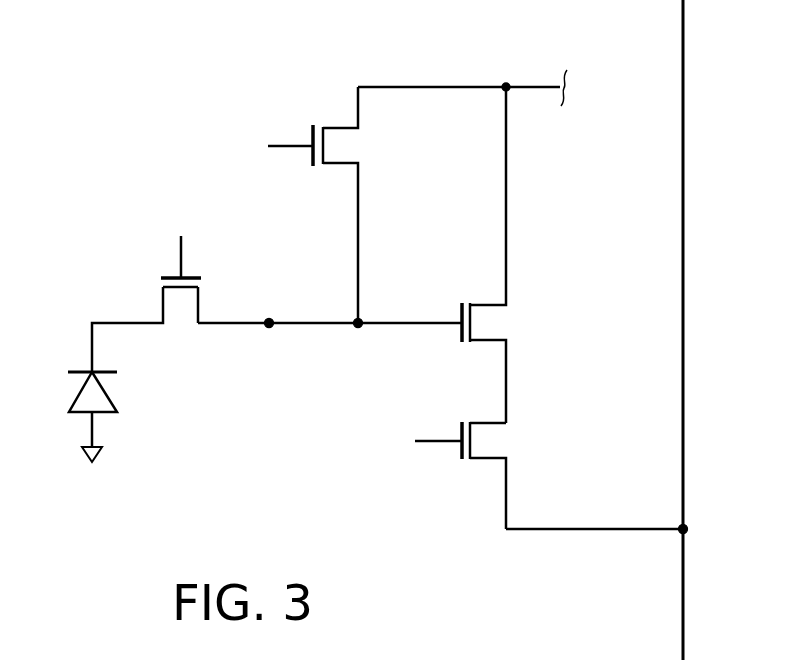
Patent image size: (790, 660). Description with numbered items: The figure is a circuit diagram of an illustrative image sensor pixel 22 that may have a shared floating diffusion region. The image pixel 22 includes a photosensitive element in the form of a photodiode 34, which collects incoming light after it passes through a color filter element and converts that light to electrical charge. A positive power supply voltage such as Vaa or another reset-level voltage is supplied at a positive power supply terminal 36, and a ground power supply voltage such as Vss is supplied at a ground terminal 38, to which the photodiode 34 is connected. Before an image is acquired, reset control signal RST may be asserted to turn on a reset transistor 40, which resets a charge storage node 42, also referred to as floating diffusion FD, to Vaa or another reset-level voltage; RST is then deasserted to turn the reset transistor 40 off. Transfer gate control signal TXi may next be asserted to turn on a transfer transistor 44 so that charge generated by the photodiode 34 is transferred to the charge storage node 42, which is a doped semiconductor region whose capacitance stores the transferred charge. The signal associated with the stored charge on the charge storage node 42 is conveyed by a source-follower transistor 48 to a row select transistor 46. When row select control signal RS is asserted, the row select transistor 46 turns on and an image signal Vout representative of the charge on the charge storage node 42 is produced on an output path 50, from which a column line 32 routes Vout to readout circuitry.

The image sensor pixel 22 is at (150, 80).
The column line 32 is at (686, 362).
The photodiode 34 is at (88, 395).
The positive power supply terminal 36 is at (544, 85).
The ground terminal 38 is at (88, 455).
The reset transistor 40 is at (342, 127).
The charge storage node 42 is at (269, 319).
The transfer transistor 44 is at (170, 305).
The row select transistor 46 is at (488, 452).
The source-follower transistor 48 is at (487, 310).
The output path 50 is at (585, 532).